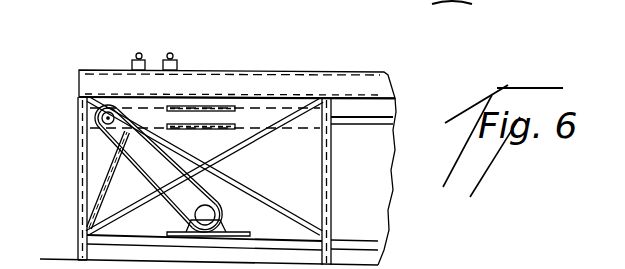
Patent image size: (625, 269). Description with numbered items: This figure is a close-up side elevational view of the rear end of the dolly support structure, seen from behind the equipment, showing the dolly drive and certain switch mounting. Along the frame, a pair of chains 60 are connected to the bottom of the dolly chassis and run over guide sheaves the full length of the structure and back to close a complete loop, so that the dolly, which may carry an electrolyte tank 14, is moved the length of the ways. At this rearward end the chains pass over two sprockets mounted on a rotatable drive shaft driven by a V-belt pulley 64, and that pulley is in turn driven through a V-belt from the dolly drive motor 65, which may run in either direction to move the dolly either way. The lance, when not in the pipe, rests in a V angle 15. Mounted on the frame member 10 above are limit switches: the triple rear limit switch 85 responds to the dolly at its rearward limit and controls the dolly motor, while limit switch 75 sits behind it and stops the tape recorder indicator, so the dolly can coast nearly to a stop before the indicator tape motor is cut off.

The top beam of frame 10 is at (327, 80).
The electrolyte tank 14 is at (20, 267).
The V angle 15 is at (377, 122).
The chains 60 is at (203, 106).
The V-belt pulley 64 is at (100, 117).
The dolly drive motor 65 is at (208, 215).
The limit switch 75 is at (132, 62).
The rear limit switch 85 is at (160, 58).